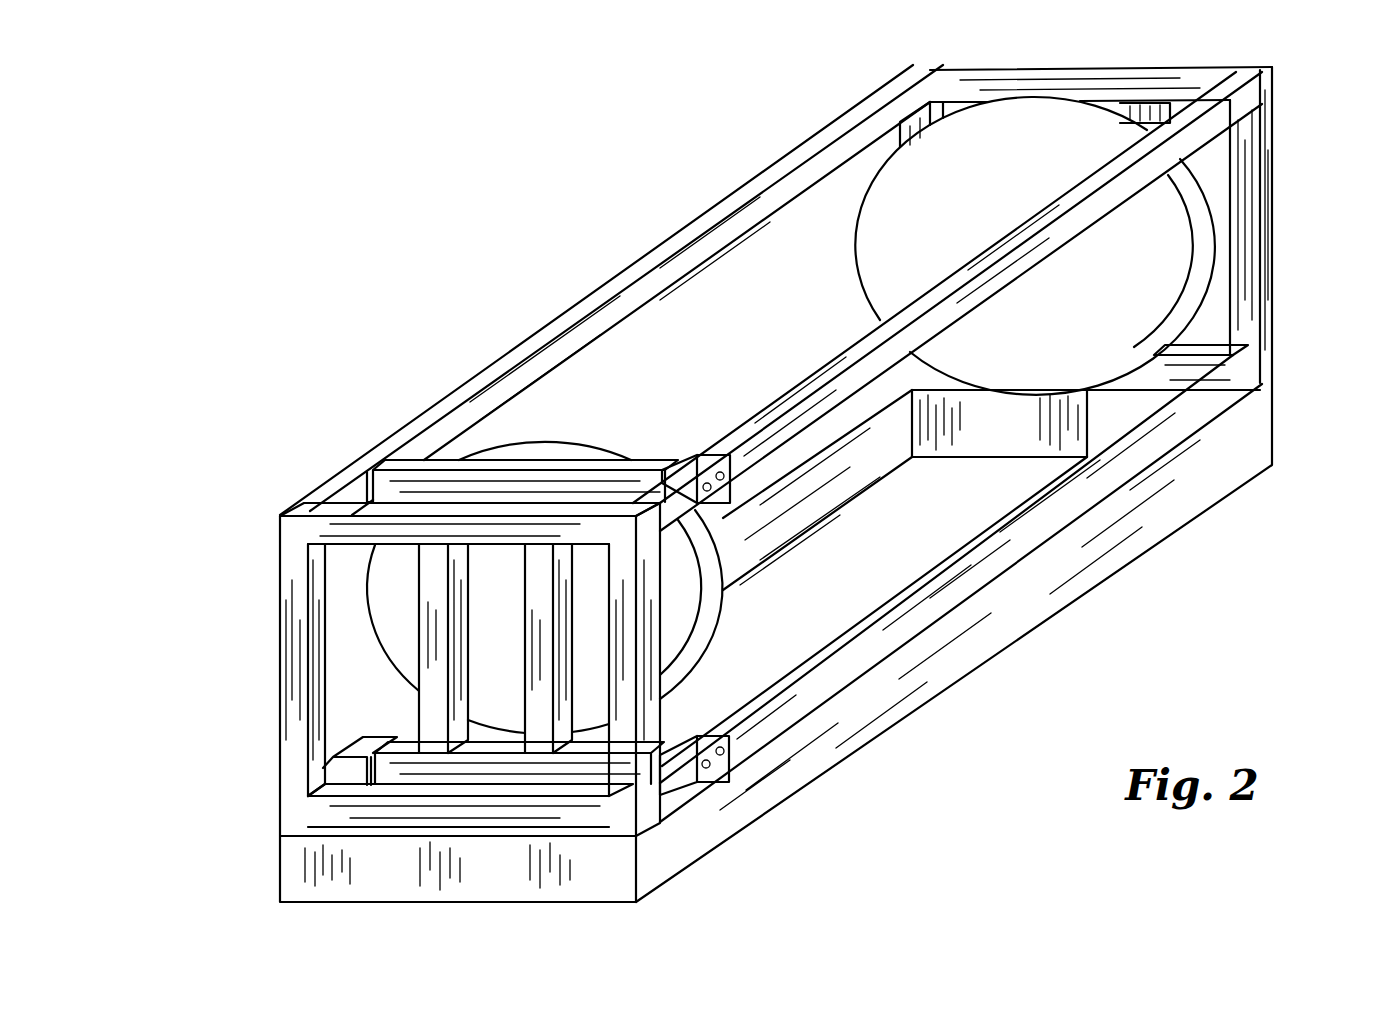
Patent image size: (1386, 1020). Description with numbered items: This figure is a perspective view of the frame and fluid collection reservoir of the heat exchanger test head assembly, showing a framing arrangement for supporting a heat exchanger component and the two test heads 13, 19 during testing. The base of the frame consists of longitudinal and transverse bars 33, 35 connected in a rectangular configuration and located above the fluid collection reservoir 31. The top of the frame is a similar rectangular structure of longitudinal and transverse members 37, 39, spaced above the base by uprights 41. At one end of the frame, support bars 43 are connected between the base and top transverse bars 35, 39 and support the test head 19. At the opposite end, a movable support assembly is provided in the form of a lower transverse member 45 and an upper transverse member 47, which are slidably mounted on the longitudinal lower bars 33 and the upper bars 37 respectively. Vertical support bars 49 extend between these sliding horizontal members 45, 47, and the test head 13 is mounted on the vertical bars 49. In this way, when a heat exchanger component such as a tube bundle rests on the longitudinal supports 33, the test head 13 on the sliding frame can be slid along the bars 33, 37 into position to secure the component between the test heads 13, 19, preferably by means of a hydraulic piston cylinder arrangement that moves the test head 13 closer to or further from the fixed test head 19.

The test head 13 is at (568, 440).
The test head 19 is at (1158, 247).
The fluid collection reservoir 31 is at (850, 738).
The longitudinal bars 33 is at (792, 464).
The transverse bars 35 is at (340, 808).
The longitudinal members 37 is at (660, 245).
The transverse members 39 is at (1083, 75).
The uprights 41 is at (905, 142).
The support bars 43 is at (1190, 92).
The lower transverse member 45 is at (490, 768).
The upper transverse member 47 is at (445, 477).
The vertical support bars 49 is at (530, 678).